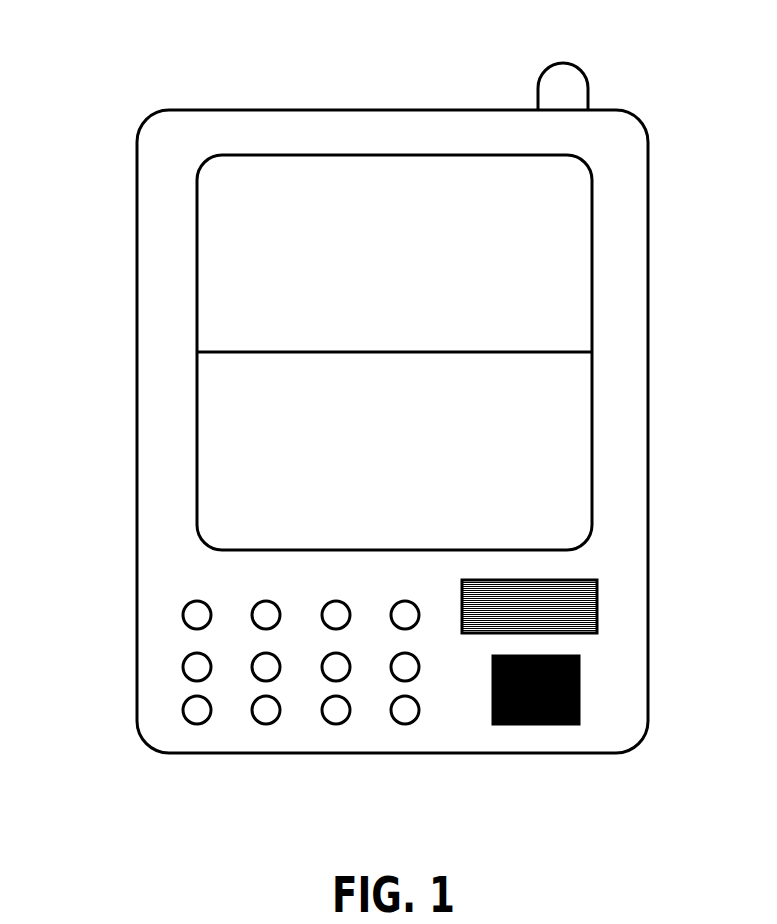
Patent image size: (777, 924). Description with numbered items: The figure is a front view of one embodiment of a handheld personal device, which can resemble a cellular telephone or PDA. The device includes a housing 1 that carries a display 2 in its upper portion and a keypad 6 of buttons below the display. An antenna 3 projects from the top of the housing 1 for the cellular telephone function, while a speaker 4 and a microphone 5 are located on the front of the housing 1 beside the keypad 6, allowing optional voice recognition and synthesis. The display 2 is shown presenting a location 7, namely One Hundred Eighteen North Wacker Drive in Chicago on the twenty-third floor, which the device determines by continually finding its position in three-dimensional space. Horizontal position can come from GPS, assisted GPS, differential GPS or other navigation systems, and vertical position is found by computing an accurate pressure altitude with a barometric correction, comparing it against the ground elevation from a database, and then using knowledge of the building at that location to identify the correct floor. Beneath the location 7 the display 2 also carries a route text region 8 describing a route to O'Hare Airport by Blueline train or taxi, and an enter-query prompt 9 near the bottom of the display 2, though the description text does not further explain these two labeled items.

The housing 1 is at (628, 235).
The display 2 is at (552, 195).
The antenna 3 is at (593, 73).
The speaker 4 is at (605, 613).
The microphone 5 is at (588, 703).
The keypad 6 is at (178, 598).
The location 7 is at (212, 216).
The route information display 8 is at (207, 382).
The enter query prompt 9 is at (270, 522).